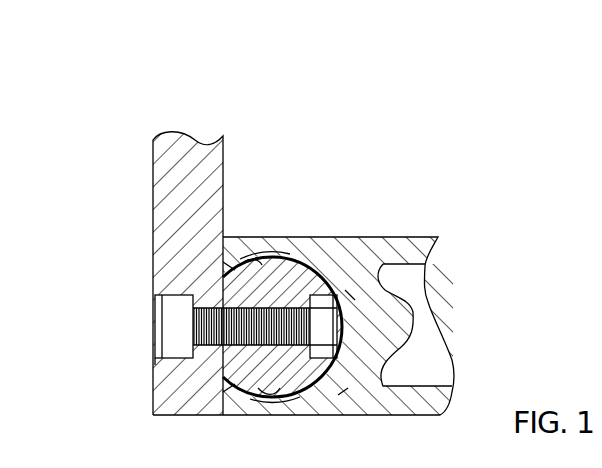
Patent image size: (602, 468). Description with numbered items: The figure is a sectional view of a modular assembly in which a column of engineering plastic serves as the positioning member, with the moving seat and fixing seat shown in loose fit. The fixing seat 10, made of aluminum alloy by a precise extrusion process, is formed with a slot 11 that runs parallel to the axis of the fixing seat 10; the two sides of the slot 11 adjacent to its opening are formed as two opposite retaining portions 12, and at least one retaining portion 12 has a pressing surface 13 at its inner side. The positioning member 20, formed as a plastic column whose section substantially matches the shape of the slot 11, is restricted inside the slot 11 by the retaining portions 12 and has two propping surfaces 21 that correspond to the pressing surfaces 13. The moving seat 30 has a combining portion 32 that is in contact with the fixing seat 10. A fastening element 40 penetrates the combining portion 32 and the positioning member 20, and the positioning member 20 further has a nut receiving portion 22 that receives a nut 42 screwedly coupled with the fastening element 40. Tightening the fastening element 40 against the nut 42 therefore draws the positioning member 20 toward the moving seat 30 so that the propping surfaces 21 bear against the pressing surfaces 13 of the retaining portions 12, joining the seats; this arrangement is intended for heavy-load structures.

The fixing seat 10 is at (325, 232).
The slot 11 is at (345, 300).
The retaining portions 12 is at (222, 277).
The pressing surface 13 is at (250, 256).
The positioning member 20 is at (322, 390).
The propping surfaces 21 is at (276, 258).
The nut receiving portion 22 is at (343, 392).
The moving seat 30 is at (154, 128).
The combining portion 32 is at (182, 372).
The fastening element 40 is at (170, 315).
The nut 42 is at (350, 354).